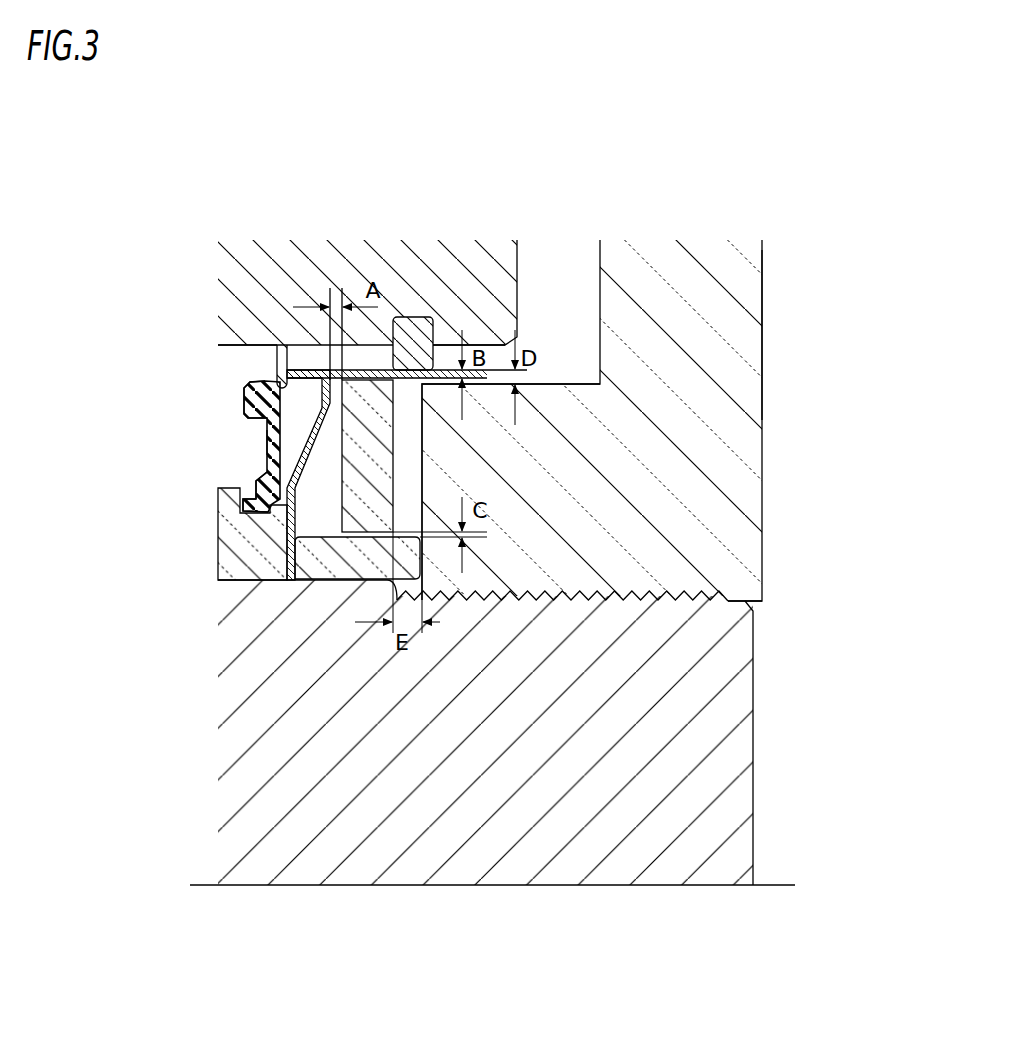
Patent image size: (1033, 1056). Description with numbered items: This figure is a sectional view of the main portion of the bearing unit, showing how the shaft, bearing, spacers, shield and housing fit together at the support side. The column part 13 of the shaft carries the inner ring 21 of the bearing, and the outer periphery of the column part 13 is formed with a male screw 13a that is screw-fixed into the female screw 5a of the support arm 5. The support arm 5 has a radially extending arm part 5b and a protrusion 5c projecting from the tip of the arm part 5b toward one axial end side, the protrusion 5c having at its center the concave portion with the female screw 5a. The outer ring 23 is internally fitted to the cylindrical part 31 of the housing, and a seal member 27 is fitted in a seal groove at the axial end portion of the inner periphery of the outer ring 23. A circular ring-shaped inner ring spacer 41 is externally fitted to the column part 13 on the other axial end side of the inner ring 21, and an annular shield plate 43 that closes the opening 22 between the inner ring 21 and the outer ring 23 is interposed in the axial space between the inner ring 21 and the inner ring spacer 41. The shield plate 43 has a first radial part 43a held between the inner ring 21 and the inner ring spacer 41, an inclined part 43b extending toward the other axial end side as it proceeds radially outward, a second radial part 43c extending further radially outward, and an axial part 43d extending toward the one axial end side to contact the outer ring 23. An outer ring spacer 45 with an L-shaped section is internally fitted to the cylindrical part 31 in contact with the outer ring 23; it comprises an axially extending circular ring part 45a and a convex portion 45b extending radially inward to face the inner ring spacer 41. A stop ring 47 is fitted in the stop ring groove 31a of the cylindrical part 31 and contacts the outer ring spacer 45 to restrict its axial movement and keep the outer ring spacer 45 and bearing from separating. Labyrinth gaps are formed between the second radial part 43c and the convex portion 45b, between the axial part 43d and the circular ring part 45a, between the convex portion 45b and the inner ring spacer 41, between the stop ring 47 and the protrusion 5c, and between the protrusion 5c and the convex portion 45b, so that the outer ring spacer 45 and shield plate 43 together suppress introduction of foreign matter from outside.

The support arm 5 is at (634, 442).
The female screw 5a is at (640, 598).
The arm part 5b is at (762, 316).
The protrusion 5c is at (652, 498).
The column part 13 is at (516, 716).
The male screw 13a is at (635, 600).
The inner ring 21 is at (246, 556).
The opening 22 is at (282, 347).
The outer ring 23 is at (276, 351).
The seal member 27 is at (296, 452).
The cylindrical part 31 is at (367, 288).
The stop ring groove 31a is at (412, 318).
The inner ring spacer 41 is at (333, 566).
The shield plate 43 is at (202, 475).
The first radial part 43a is at (197, 518).
The inclined part 43b is at (254, 478).
The second radial part 43c is at (268, 438).
The axial part 43d is at (262, 401).
The outer ring spacer 45 is at (582, 451).
The circular ring part 45a is at (365, 373).
The convex portion 45b is at (378, 458).
The stop ring 47 is at (458, 343).